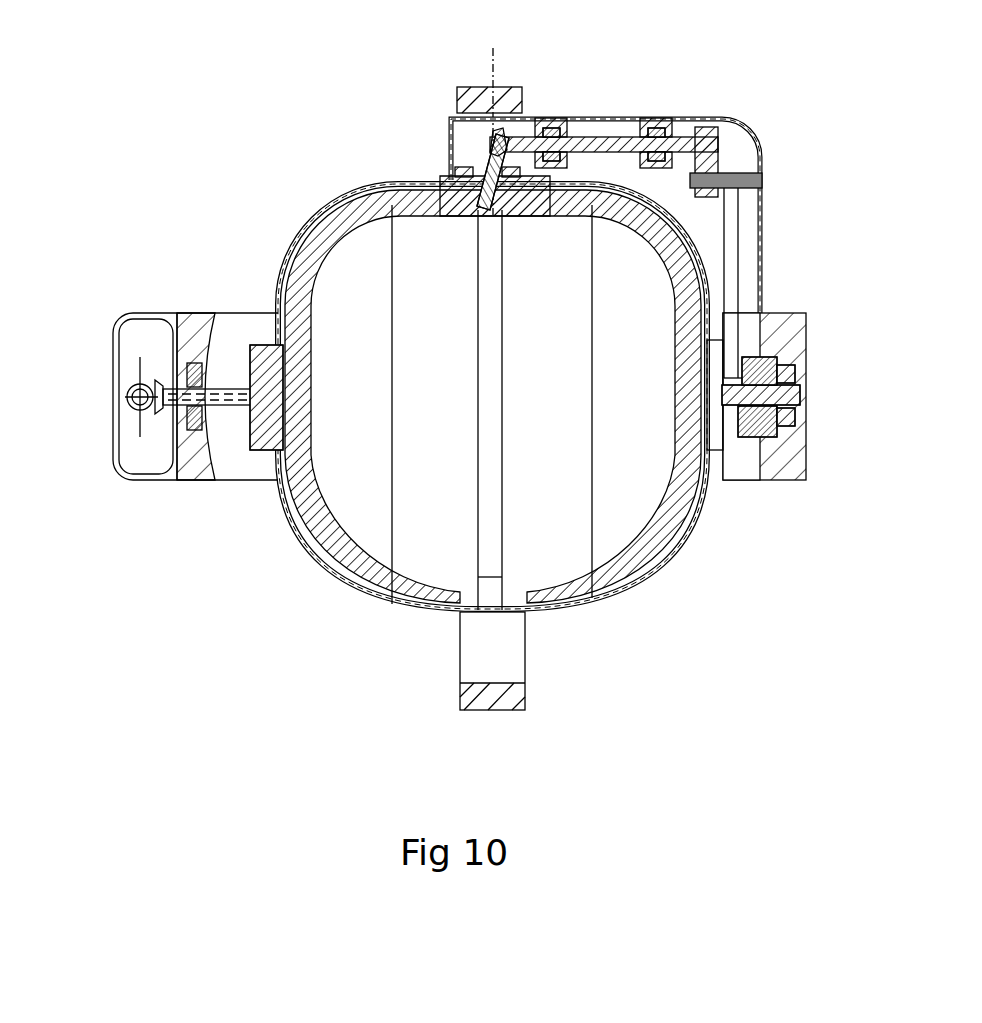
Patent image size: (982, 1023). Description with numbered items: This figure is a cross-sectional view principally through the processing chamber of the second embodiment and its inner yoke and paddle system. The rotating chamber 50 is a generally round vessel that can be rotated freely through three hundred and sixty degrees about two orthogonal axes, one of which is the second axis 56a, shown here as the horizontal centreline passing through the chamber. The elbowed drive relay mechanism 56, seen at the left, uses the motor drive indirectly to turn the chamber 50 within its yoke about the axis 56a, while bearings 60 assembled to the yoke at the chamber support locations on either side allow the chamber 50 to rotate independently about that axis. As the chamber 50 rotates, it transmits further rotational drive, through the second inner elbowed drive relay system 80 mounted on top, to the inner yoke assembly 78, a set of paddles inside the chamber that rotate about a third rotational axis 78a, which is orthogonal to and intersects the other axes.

The rotating chamber 50 is at (348, 212).
The elbowed drive relay mechanism 56 is at (175, 275).
The second axis 56a is at (125, 396).
The bearings 60 is at (212, 358).
The inner yoke assembly 78 is at (385, 568).
The third rotational axis 78a is at (497, 116).
The inner elbowed drive relay system 80 is at (752, 92).